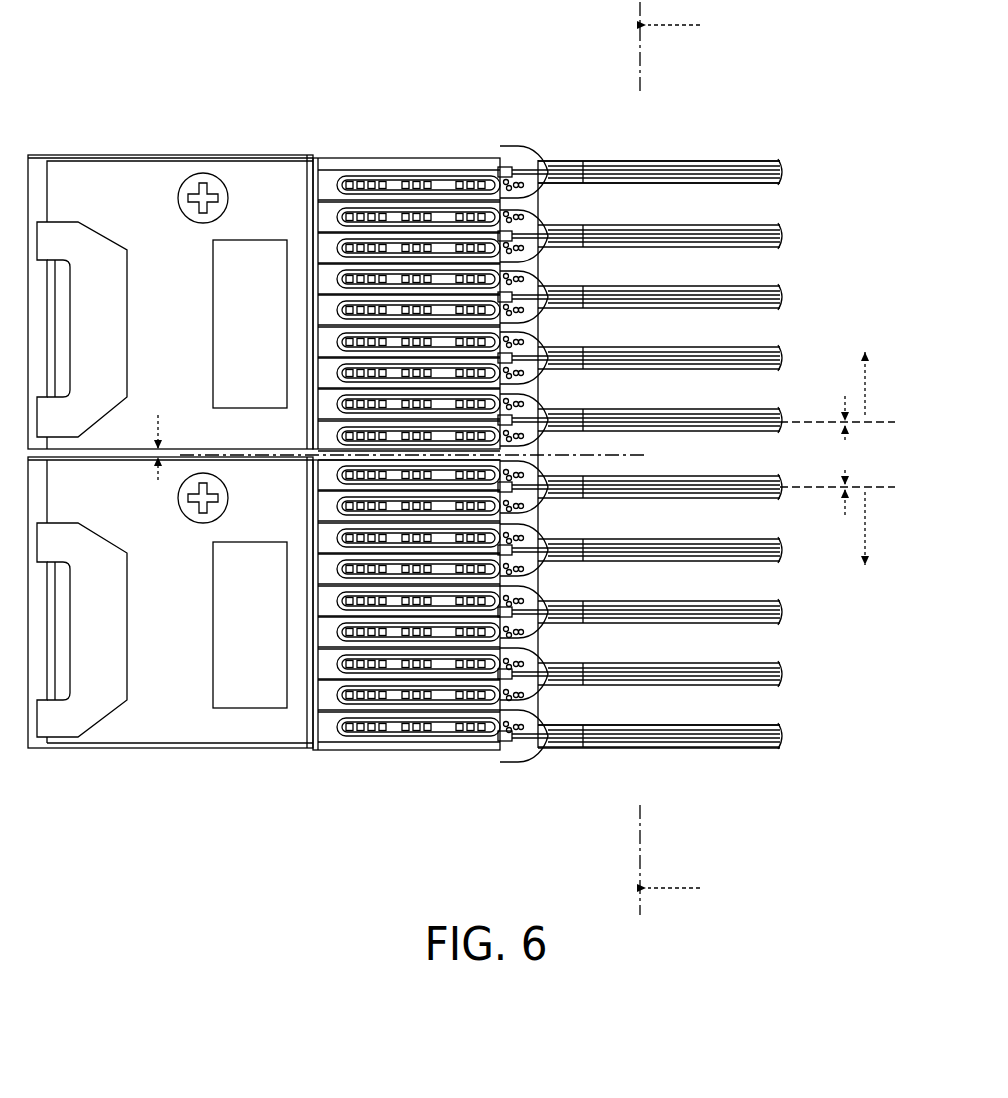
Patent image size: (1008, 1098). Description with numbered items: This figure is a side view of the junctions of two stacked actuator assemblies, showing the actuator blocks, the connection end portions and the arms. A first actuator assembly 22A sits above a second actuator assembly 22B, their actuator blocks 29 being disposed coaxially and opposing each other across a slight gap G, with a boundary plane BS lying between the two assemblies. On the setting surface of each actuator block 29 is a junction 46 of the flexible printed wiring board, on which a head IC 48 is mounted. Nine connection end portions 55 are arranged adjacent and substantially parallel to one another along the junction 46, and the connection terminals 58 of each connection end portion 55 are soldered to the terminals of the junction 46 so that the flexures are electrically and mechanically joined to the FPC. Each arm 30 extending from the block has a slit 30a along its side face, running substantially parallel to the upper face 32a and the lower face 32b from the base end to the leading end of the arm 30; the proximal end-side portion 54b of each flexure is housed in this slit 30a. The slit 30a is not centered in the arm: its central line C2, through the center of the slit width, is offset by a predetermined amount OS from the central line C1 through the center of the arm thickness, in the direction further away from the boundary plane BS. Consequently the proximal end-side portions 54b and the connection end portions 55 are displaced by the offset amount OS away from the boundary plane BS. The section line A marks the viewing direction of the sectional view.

The actuator block 29 is at (110, 155).
The junction 46 is at (258, 162).
The head IC 48 is at (213, 279).
The connection end portion 55 is at (318, 244).
The connection terminal 58 is at (384, 183).
The proximal end-side portion 54b is at (628, 161).
The arm 30 is at (688, 286).
The slit 30a is at (772, 162).
The upper face 32a is at (722, 161).
The lower face 32b is at (722, 185).
The first actuator assembly 22A is at (580, 128).
The second actuator assembly 22B is at (576, 773).
The boundary plane BS is at (610, 455).
The gap G is at (148, 461).
The offset amount OS is at (837, 454).
The central line of the arm C1 is at (884, 448).
The central line of the slit C2 is at (886, 418).
The section line A is at (668, 461).